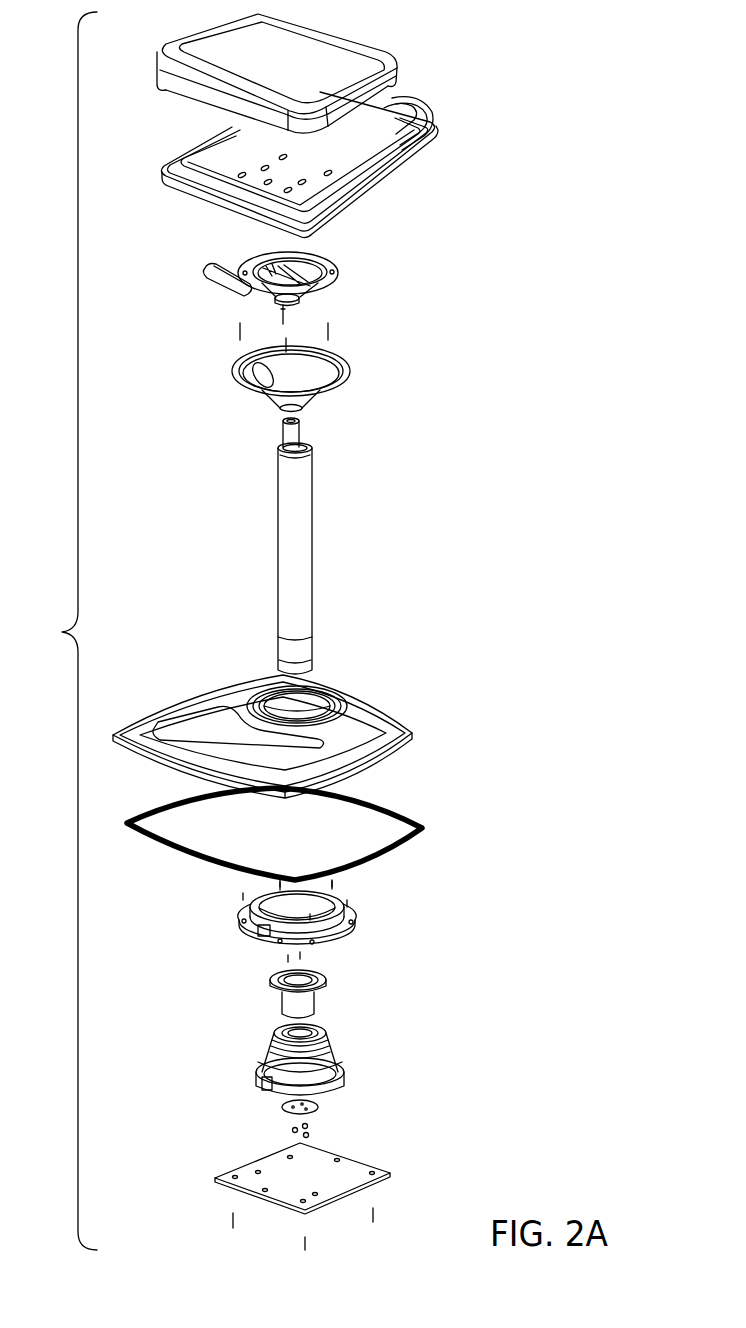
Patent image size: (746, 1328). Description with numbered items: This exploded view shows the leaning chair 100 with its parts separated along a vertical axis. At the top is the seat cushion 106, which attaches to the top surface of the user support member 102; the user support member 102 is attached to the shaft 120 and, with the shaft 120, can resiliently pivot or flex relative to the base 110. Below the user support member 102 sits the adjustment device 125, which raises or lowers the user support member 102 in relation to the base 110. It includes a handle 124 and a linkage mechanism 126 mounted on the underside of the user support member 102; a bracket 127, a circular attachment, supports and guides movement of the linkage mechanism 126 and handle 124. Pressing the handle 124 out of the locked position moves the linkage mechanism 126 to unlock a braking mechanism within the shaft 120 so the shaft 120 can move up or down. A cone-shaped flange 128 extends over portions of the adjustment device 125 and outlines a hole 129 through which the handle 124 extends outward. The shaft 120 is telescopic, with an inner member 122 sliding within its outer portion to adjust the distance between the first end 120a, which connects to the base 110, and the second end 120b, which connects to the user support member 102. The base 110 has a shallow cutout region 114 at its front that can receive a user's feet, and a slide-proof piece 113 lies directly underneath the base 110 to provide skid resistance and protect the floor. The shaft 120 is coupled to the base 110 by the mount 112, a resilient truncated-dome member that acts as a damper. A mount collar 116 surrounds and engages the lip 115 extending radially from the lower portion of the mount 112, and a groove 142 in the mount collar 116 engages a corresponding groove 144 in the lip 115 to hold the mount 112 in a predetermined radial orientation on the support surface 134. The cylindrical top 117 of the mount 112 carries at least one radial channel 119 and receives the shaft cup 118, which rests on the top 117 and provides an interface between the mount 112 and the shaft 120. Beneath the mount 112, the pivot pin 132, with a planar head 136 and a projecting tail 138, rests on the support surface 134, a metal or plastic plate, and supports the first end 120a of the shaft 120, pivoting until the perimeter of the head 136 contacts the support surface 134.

The leaning chair 100 is at (63, 631).
The user support member 102 is at (405, 184).
The seat cushion 106 is at (210, 44).
The base 110 is at (285, 731).
The mount 112 is at (306, 1058).
The slide-proof piece 113 is at (398, 826).
The cutout region 114 is at (175, 722).
The lip 115 is at (345, 1083).
The mount collar 116 is at (270, 925).
The cylindrical top 117 is at (325, 1030).
The shaft cup 118 is at (280, 982).
The radial channel 119 is at (333, 1040).
The shaft 120 is at (319, 558).
The first end of the shaft 120a is at (330, 655).
The second end of the shaft 120b is at (330, 466).
The inner member 122 is at (285, 432).
The handle 124 is at (205, 274).
The adjustment device 125 is at (288, 289).
The linkage mechanism 126 is at (300, 282).
The bracket 127 is at (258, 262).
The cone-shaped flange 128 is at (309, 375).
The hole 129 is at (258, 386).
The pivot pin 132 is at (289, 1120).
The support surface 134 is at (228, 1178).
The head 136 is at (320, 1108).
The tail 138 is at (312, 1120).
The groove 142 is at (262, 937).
The groove 144 is at (264, 1086).